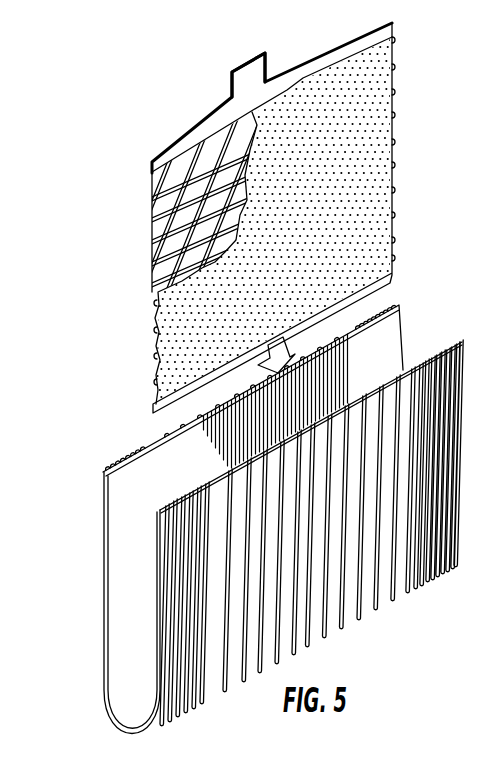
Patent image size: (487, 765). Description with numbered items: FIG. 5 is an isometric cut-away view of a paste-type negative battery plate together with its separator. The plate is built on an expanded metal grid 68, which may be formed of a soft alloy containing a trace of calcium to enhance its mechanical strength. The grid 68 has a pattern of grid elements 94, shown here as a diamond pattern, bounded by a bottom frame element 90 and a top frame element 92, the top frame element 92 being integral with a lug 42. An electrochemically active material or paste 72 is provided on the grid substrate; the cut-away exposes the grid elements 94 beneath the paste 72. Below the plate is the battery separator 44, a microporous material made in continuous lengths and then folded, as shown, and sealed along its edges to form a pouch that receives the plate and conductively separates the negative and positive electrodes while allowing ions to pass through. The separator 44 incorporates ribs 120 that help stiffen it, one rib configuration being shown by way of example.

The expanded metal grid 68 is at (420, 52).
The lug 42 is at (247, 77).
The top frame element 92 is at (210, 132).
The grid elements 94 is at (175, 207).
The electrochemically active material 72 is at (350, 157).
The bottom frame element 90 is at (367, 288).
The battery separator 44 is at (259, 545).
The rib 120 is at (253, 620).